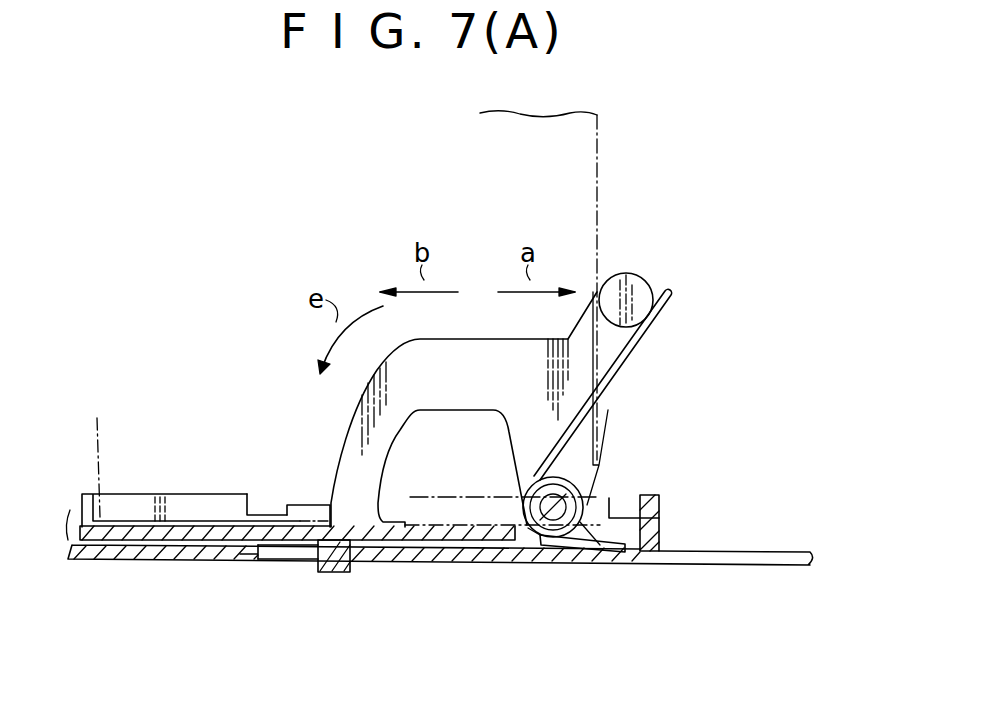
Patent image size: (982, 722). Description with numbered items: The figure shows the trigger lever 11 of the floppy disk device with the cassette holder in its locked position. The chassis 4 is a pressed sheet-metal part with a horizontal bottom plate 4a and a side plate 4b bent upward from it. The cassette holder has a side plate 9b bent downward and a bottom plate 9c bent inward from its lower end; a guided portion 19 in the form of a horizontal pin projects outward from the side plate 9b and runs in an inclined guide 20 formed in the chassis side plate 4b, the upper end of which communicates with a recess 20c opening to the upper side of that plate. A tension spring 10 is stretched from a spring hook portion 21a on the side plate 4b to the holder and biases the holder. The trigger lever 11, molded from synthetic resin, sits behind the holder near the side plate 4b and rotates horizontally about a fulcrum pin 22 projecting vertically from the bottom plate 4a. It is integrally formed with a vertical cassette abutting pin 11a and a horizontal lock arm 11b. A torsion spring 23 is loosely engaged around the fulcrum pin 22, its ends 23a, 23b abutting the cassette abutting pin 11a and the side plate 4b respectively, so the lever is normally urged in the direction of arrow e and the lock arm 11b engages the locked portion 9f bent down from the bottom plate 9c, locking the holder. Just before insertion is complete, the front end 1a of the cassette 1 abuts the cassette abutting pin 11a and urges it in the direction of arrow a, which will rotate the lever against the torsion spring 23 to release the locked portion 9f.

The disk cassette 1 is at (600, 174).
The front end of the cassette 1a is at (598, 218).
The chassis 4 is at (757, 567).
The bottom plate 4a is at (705, 530).
The side plate 4b is at (148, 552).
The side plate 9b is at (142, 532).
The bottom plate 9c is at (222, 510).
The locked portion 9f is at (305, 505).
The tension spring 10 is at (612, 508).
The trigger lever 11 is at (468, 357).
The cassette abutting pin 11a is at (633, 290).
The lock arm 11b is at (388, 487).
The guided portion 19 is at (340, 568).
The inclined guide 20 is at (292, 560).
The recess 20c is at (262, 556).
The spring hook portion 21a is at (660, 500).
The fulcrum pin 22 is at (541, 524).
The torsion spring 23 is at (552, 477).
The end of the torsion spring 23a is at (618, 372).
The end of the torsion spring 23b is at (608, 560).